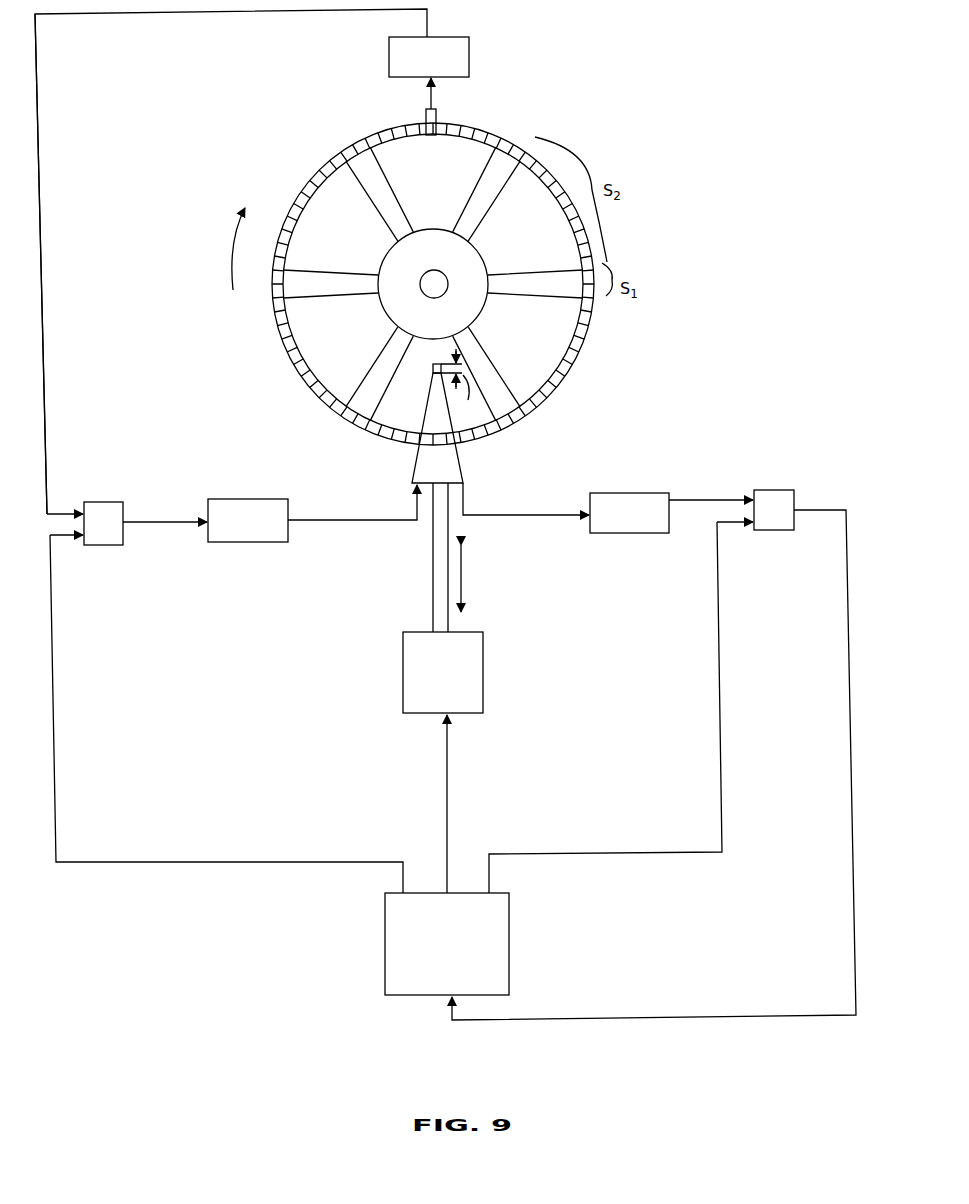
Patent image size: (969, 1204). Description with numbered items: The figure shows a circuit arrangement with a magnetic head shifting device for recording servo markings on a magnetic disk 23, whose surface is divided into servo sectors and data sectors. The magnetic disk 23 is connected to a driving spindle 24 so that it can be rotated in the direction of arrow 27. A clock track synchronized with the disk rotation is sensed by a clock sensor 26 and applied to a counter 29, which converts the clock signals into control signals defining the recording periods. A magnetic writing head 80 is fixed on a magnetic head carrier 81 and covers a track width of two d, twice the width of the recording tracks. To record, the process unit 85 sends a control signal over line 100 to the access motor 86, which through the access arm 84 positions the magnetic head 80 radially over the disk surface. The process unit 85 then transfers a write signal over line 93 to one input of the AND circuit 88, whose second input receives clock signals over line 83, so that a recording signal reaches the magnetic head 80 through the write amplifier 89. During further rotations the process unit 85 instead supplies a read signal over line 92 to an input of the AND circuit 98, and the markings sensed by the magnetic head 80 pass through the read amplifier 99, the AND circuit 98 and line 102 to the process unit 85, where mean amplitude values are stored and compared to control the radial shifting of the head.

The magnetic disk 23 is at (318, 371).
The driving spindle 24 is at (442, 283).
The clock sensor 26 is at (438, 112).
The arrow 27 is at (236, 254).
The counter 29 is at (463, 57).
The magnetic writing head 80 is at (434, 367).
The magnetic head carrier 81 is at (462, 460).
The line 83 is at (42, 244).
The access arm 84 is at (440, 583).
The process unit 85 is at (505, 948).
The access motor 86 is at (484, 667).
The AND circuit 88 is at (104, 545).
The write amplifier 89 is at (250, 542).
The line 92 is at (722, 762).
The line 93 is at (54, 720).
The AND circuit 98 is at (776, 530).
The read amplifier 99 is at (632, 533).
The line 100 is at (445, 792).
The line 102 is at (855, 874).